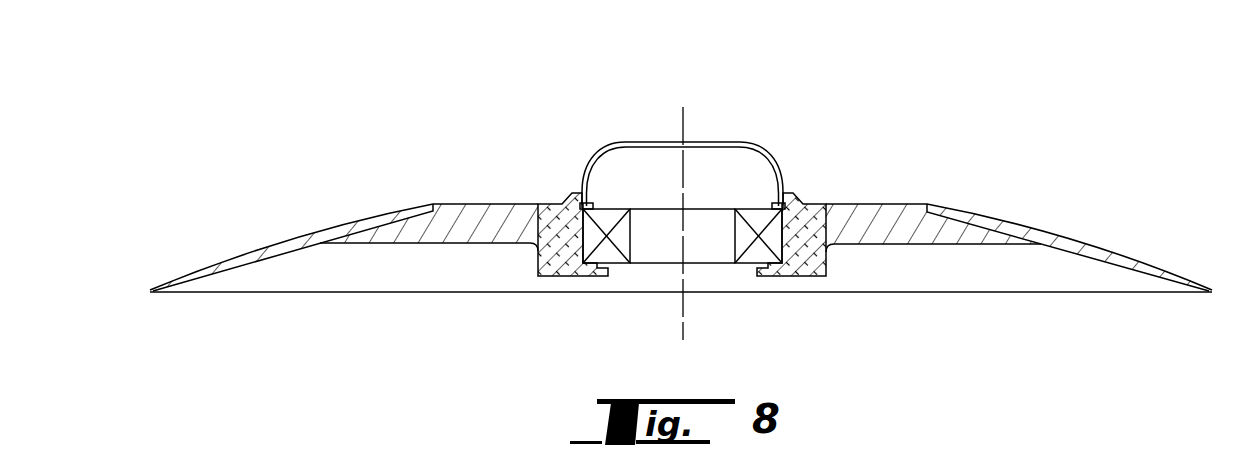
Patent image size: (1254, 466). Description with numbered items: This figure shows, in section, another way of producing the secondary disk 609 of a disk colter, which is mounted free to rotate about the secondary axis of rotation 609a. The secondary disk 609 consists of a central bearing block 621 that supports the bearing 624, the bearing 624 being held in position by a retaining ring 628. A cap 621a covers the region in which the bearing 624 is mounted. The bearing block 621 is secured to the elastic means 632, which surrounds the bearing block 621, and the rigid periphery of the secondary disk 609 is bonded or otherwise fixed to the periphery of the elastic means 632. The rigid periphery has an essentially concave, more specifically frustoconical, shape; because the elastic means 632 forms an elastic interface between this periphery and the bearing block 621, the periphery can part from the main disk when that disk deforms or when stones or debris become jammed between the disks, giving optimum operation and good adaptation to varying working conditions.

The secondary disk 609 is at (1052, 214).
The secondary axis of rotation 609a is at (684, 124).
The central bearing block 621 is at (567, 217).
The cap 621a is at (752, 143).
The bearing 624 is at (620, 250).
The retaining ring 628 is at (778, 206).
The elastic means 632 is at (480, 207).